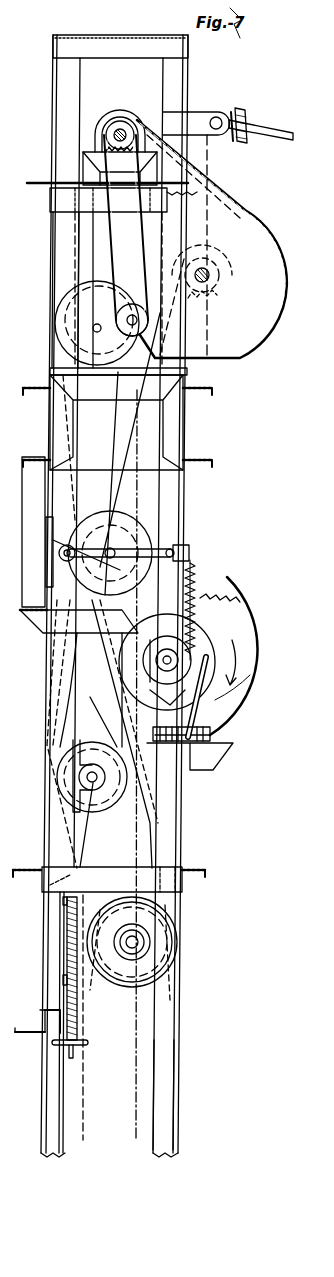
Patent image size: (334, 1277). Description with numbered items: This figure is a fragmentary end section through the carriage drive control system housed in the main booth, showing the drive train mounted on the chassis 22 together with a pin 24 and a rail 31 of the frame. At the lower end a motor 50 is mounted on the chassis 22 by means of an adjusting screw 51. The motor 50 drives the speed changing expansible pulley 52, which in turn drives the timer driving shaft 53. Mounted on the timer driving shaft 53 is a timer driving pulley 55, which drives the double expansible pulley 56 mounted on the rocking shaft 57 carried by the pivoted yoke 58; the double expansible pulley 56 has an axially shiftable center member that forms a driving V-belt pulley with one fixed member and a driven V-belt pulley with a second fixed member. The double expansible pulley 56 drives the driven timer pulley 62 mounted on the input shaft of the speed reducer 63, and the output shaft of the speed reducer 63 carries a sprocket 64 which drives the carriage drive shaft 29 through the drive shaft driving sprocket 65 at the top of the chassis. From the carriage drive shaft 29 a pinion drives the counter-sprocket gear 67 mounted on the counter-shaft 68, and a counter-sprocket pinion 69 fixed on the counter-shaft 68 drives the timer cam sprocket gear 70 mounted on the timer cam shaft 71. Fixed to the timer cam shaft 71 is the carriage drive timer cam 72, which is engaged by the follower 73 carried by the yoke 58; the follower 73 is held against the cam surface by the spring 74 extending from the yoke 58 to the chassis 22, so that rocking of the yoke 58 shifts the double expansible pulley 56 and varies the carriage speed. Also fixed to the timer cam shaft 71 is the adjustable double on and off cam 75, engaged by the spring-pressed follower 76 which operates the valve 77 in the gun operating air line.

The chassis 22 is at (190, 90).
The bracket pin 24 is at (280, 132).
The carriage drive shaft 29 is at (123, 127).
The frame rail 31 is at (93, 228).
The motor 50 is at (110, 982).
The adjusting screw 51 is at (75, 1013).
The speed changing expansible pulley 52 is at (172, 942).
The timer driving shaft 53 is at (112, 817).
The timer driving pulley 55 is at (102, 734).
The double expansible pulley 56 is at (152, 520).
The rocking shaft 57 is at (115, 552).
The pivoted yoke 58 is at (147, 552).
The driven timer pulley 62 is at (60, 330).
The speed reducer 63 is at (83, 307).
The sprocket 64 is at (126, 334).
The drive shaft driving sprocket 65 is at (112, 110).
The counter-sprocket gear 67 is at (262, 247).
The counter-shaft 68 is at (215, 272).
The counter-sprocket pinion 69 is at (228, 308).
The timer cam sprocket gear 70 is at (230, 707).
The timer cam shaft 71 is at (155, 664).
The carriage drive timer cam 72 is at (207, 627).
The follower 73 is at (197, 593).
The spring 74 is at (217, 607).
The adjustable double on and off cam 75 is at (172, 638).
The spring-pressed follower 76 is at (223, 697).
The valve 77 is at (187, 733).